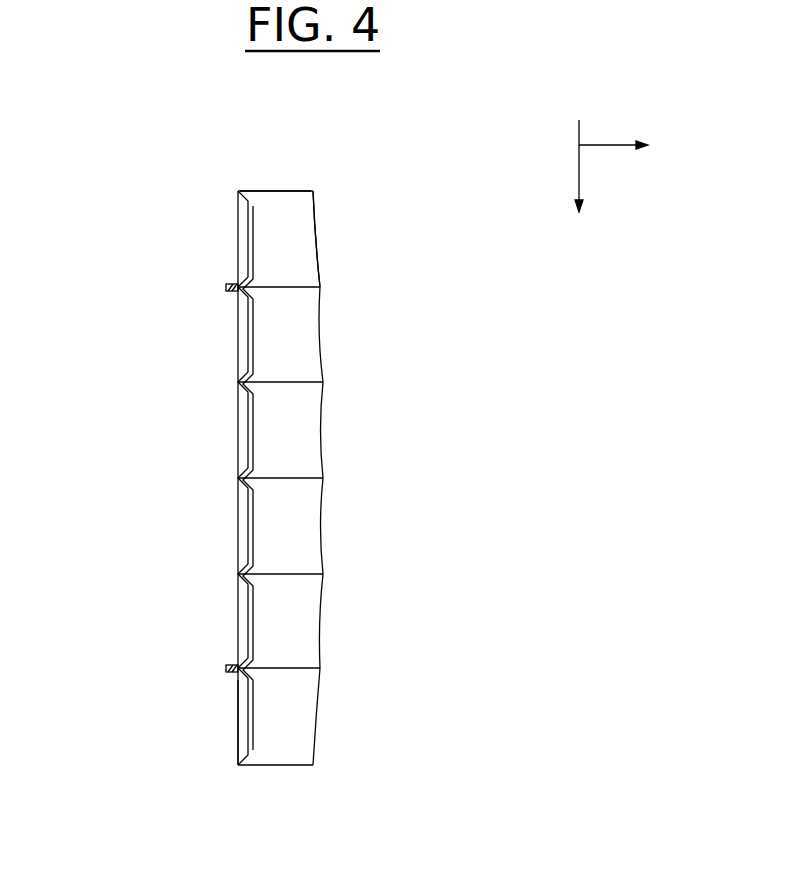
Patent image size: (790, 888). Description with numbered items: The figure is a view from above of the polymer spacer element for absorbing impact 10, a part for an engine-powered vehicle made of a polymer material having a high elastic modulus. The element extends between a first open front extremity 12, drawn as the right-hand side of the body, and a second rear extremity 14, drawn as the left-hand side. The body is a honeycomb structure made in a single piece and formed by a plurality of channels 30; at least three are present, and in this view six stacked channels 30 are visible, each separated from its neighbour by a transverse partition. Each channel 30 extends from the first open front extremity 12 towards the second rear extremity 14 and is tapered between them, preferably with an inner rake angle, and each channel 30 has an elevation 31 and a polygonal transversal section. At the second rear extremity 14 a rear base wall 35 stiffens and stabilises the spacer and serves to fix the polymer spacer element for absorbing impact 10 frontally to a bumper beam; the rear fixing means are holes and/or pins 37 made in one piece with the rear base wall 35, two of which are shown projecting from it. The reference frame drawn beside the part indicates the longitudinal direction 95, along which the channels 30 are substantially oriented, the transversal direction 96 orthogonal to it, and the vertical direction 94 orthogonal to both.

The polymer spacer element for absorbing impact 10 is at (520, 328).
The first open front extremity 12 is at (305, 191).
The second rear extremity 14 is at (251, 190).
The channels 30 is at (330, 230).
The elevation 31 is at (275, 191).
The rear base wall 35 is at (240, 728).
The holes and/or pins 37 is at (230, 292).
The vertical direction 94 is at (579, 145).
The longitudinal direction 95 is at (634, 149).
The transversal direction 96 is at (582, 197).